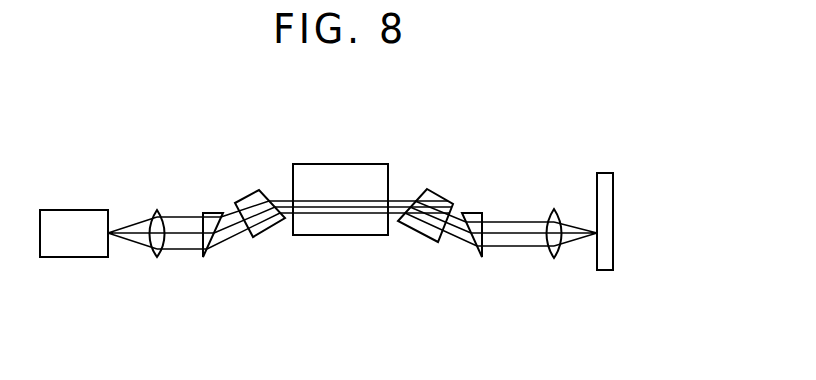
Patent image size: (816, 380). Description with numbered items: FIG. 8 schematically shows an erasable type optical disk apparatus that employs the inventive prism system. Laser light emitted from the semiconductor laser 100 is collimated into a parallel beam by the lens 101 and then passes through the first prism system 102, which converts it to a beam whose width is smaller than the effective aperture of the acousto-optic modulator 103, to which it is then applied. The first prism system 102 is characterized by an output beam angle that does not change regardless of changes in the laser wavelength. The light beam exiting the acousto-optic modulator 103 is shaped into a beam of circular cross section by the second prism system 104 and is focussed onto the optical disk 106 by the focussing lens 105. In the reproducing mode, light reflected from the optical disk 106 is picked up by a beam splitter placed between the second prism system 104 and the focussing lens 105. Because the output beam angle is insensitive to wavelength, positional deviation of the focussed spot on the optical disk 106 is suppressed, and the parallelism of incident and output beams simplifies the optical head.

The semiconductor laser 100 is at (76, 209).
The lens 101 is at (157, 210).
The first prism system 102 is at (273, 256).
The acousto-optic modulator (AOM) 103 is at (338, 163).
The second prism system 104 is at (482, 256).
The focussing lens 105 is at (553, 209).
The optical disk 106 is at (603, 173).